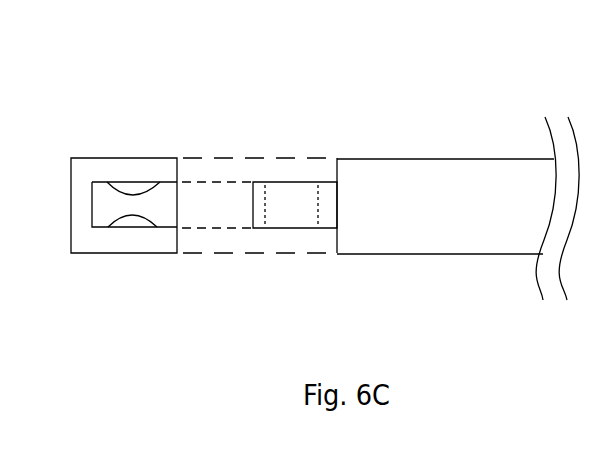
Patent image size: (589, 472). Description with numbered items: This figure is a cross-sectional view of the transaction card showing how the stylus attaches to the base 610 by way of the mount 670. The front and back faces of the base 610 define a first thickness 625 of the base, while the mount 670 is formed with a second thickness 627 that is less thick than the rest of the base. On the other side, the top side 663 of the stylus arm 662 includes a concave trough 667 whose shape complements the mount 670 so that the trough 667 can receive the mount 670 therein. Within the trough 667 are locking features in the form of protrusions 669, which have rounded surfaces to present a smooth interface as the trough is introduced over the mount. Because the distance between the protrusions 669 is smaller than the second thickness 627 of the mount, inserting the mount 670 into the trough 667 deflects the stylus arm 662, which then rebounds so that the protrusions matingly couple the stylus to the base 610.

The base 610 is at (460, 192).
The first thickness 625 is at (384, 159).
The second thickness 627 is at (214, 182).
The stylus arm 662 is at (90, 235).
The top side 663 is at (240, 141).
The concave trough 667 is at (153, 205).
The protrusions 669 is at (131, 188).
The mount 670 is at (290, 182).